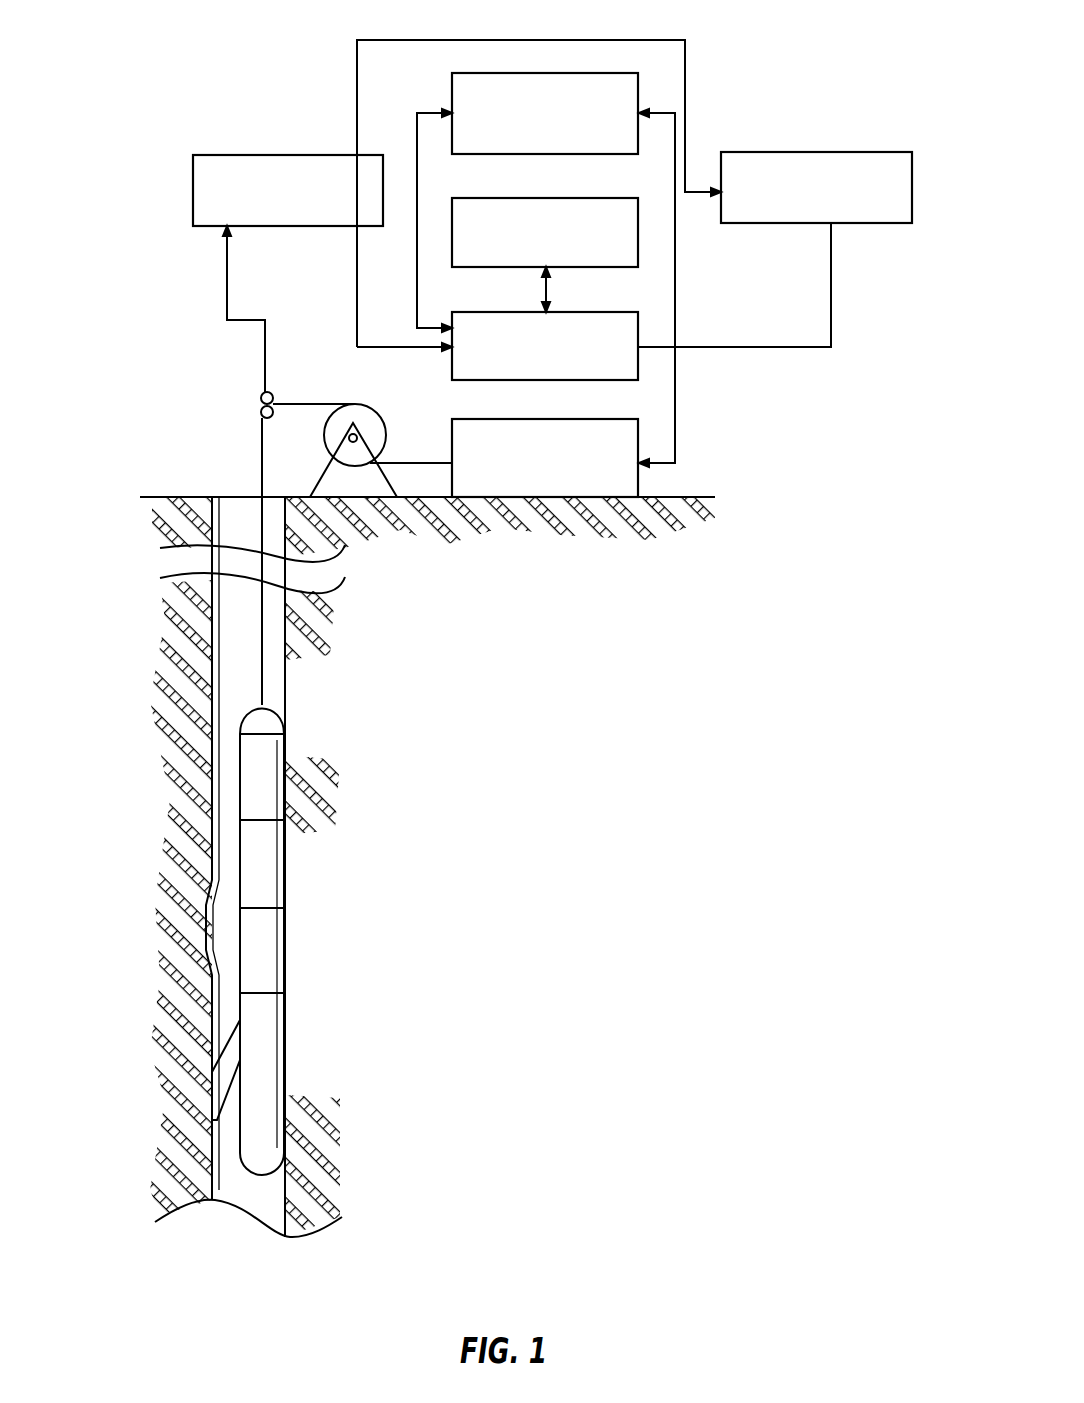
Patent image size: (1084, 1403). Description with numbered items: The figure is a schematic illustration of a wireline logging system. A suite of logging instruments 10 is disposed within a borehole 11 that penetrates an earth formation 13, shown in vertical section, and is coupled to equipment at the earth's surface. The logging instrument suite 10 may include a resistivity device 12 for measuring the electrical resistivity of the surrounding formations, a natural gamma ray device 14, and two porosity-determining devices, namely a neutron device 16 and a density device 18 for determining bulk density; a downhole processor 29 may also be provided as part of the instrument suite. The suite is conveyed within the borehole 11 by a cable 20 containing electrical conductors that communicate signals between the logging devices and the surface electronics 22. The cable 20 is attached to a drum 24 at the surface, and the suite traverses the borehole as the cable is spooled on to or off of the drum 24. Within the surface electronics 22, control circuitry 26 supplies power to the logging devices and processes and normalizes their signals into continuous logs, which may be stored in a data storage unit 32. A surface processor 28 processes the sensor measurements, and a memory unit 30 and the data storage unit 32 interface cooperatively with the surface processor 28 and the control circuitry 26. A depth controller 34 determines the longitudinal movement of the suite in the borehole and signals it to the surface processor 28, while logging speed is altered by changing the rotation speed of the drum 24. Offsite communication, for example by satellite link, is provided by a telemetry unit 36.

The logging instrument suite 10 is at (292, 923).
The borehole 11 is at (285, 690).
The resistivity device 12 is at (297, 772).
The earth formation 13 is at (240, 687).
The natural gamma ray device 14 is at (285, 872).
The neutron device 16 is at (285, 978).
The density device 18 is at (285, 1028).
The cable 20 is at (270, 658).
The surface electronics 22 is at (186, 178).
The drum 24 is at (353, 442).
The control circuitry 26 is at (639, 432).
The surface processor 28 is at (639, 365).
The downhole processor 29 is at (265, 727).
The memory unit 30 is at (639, 244).
The data storage unit 32 is at (580, 72).
The depth controller 34 is at (293, 155).
The telemetry unit 36 is at (803, 152).